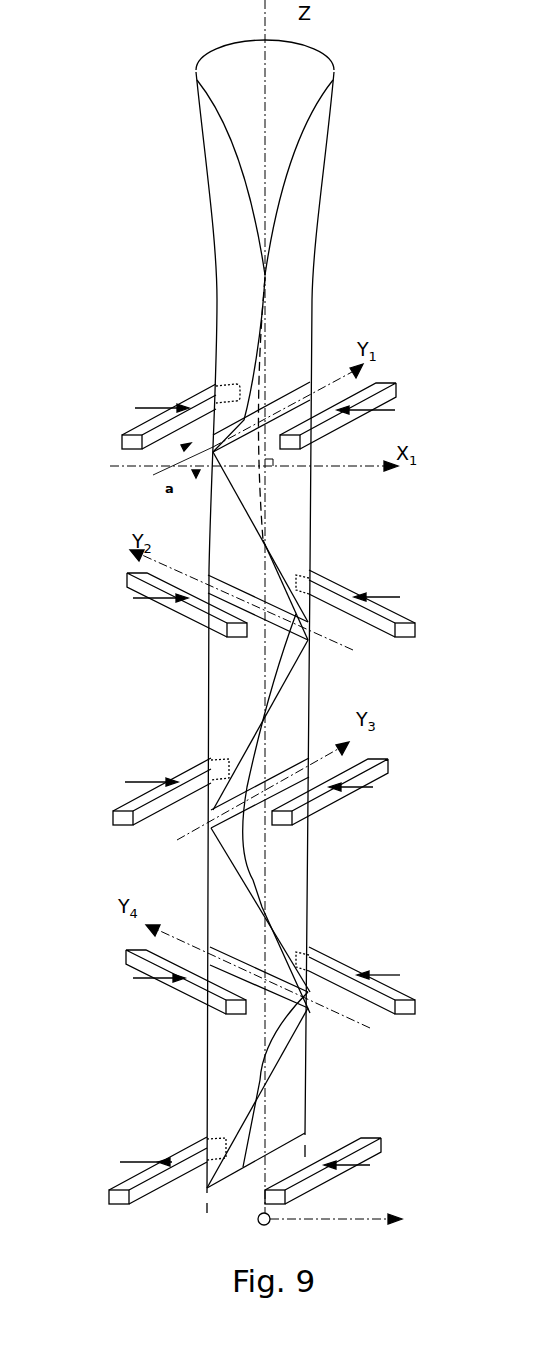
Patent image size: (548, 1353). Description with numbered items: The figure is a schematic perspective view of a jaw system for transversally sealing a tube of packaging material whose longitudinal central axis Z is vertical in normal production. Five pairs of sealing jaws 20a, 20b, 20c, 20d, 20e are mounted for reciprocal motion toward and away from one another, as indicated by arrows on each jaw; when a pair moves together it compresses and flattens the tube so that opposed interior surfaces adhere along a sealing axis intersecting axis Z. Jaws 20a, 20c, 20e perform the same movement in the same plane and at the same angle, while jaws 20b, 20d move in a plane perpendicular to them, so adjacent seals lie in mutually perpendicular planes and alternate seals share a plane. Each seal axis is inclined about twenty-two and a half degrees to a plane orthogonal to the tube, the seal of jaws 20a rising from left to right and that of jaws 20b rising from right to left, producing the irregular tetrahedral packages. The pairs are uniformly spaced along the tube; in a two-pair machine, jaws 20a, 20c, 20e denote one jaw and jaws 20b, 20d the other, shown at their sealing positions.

The sealing jaws 20a is at (196, 400).
The sealing jaws 20b is at (157, 589).
The sealing jaws 20c is at (195, 773).
The sealing jaws 20d is at (173, 967).
The sealing jaws 20e is at (188, 1152).